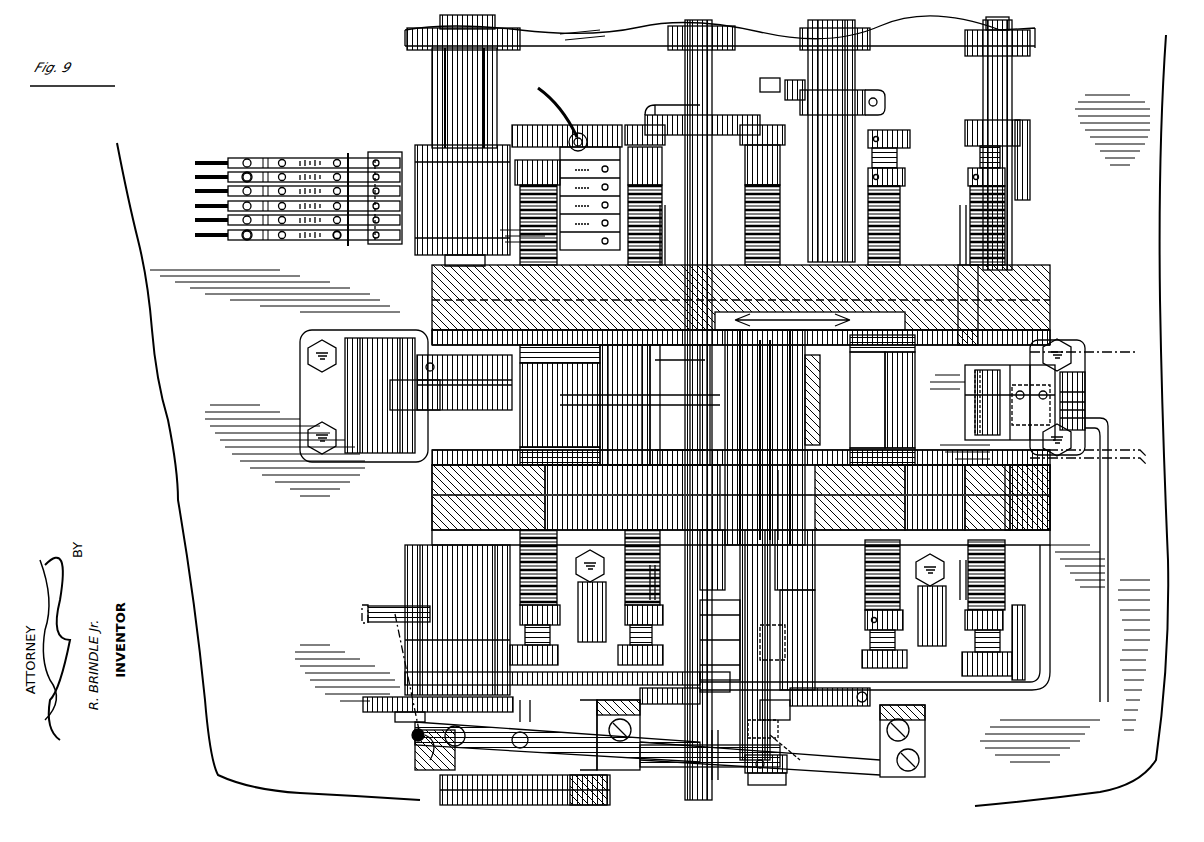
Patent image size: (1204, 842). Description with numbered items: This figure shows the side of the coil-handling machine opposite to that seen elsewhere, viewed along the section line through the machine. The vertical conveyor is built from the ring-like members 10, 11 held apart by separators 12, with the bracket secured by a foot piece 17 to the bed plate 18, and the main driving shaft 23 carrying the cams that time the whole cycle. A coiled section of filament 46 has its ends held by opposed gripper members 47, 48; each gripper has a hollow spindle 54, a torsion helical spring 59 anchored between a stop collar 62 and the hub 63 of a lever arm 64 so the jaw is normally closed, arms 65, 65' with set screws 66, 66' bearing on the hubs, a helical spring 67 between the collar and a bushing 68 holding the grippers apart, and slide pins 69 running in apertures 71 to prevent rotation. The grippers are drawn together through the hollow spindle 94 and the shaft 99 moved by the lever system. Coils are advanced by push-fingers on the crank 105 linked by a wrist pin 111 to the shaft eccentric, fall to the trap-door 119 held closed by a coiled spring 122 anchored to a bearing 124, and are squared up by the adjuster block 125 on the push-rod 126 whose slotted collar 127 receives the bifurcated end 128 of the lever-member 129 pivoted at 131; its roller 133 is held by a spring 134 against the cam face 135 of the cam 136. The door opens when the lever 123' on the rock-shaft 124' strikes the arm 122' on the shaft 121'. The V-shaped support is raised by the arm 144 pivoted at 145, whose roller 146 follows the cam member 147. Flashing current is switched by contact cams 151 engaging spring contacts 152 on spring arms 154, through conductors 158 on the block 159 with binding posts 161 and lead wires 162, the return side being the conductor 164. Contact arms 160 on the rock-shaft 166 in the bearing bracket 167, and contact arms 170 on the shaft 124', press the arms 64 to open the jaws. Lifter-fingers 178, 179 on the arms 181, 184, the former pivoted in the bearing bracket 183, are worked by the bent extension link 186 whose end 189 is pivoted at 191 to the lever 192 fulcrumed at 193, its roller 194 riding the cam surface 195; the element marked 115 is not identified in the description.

The ring-like member 10 is at (445, 283).
The ring-like member 11 is at (440, 500).
The separators 12 is at (598, 432).
The foot piece 17 is at (636, 40).
The bed plate 18 is at (642, 420).
The main driving shaft 23 is at (396, 20).
The filament 46 is at (537, 360).
The gripper member 47 is at (872, 352).
The gripper member 48 is at (522, 446).
The hollow spindle 54 is at (866, 192).
The helical spring 59 is at (898, 160).
The stop collar 62 is at (905, 178).
The hub 63 is at (905, 118).
The lever arm 64 is at (910, 138).
The arm 65 is at (796, 82).
The arm 65' is at (791, 715).
The set screw 66 is at (769, 72).
The set screw 66' is at (782, 734).
The helical spring 67 is at (900, 195).
The bushing 68 is at (992, 512).
The slide pins 69 is at (662, 240).
The apertures 71 is at (963, 268).
The hollow spindle 94 is at (858, 79).
The shaft 99 is at (858, 42).
The crank 105 is at (608, 796).
The wrist pin 111 is at (440, 788).
The column 115 is at (407, 40).
The trap-door 119 is at (745, 368).
The shaft 121' is at (697, 640).
The coiled spring 122 is at (754, 437).
The arm 122' is at (719, 767).
The lever 123' is at (769, 771).
The bearing 124 is at (812, 591).
The rock-shaft 124' is at (686, 410).
The adjuster block 125 is at (780, 488).
The push-rod 126 is at (778, 606).
The slotted collar 127 is at (788, 766).
The bifurcated end 128 is at (788, 780).
The lever-member 129 is at (690, 760).
The pivot 131 is at (602, 770).
The roller 133 is at (440, 766).
The spring 134 is at (380, 626).
The cam face 135 is at (412, 732).
The cam 136 is at (395, 718).
The arm 144 is at (690, 410).
The pivot 145 is at (362, 332).
The roller 146 is at (450, 393).
The cam member 147 is at (400, 392).
The contact cams 151 is at (400, 158).
The spring contact 152 is at (368, 160).
The spring arms 154 is at (582, 175).
The conductors 158 is at (262, 240).
The block 159 is at (321, 240).
The contact-arms 160 is at (1030, 170).
The binding posts 161 is at (250, 162).
The lead wires 162 is at (195, 191).
The conductor 164 is at (575, 120).
The rock-shaft 166 is at (1012, 24).
The bearing bracket 167 is at (1030, 46).
The contact arms 170 is at (750, 128).
The lifter-finger 178 is at (972, 395).
The lifter-finger 179 is at (965, 375).
The arm 181 is at (1090, 397).
The bearing bracket 183 is at (1085, 378).
The arm 184 is at (1086, 412).
The bent extension link 186 is at (1042, 692).
The end 189 is at (648, 680).
The pivot 191 is at (410, 678).
The lever 192 is at (603, 735).
The fulcrum 193 is at (592, 722).
The roller 194 is at (531, 717).
The cam surface 195 is at (365, 703).